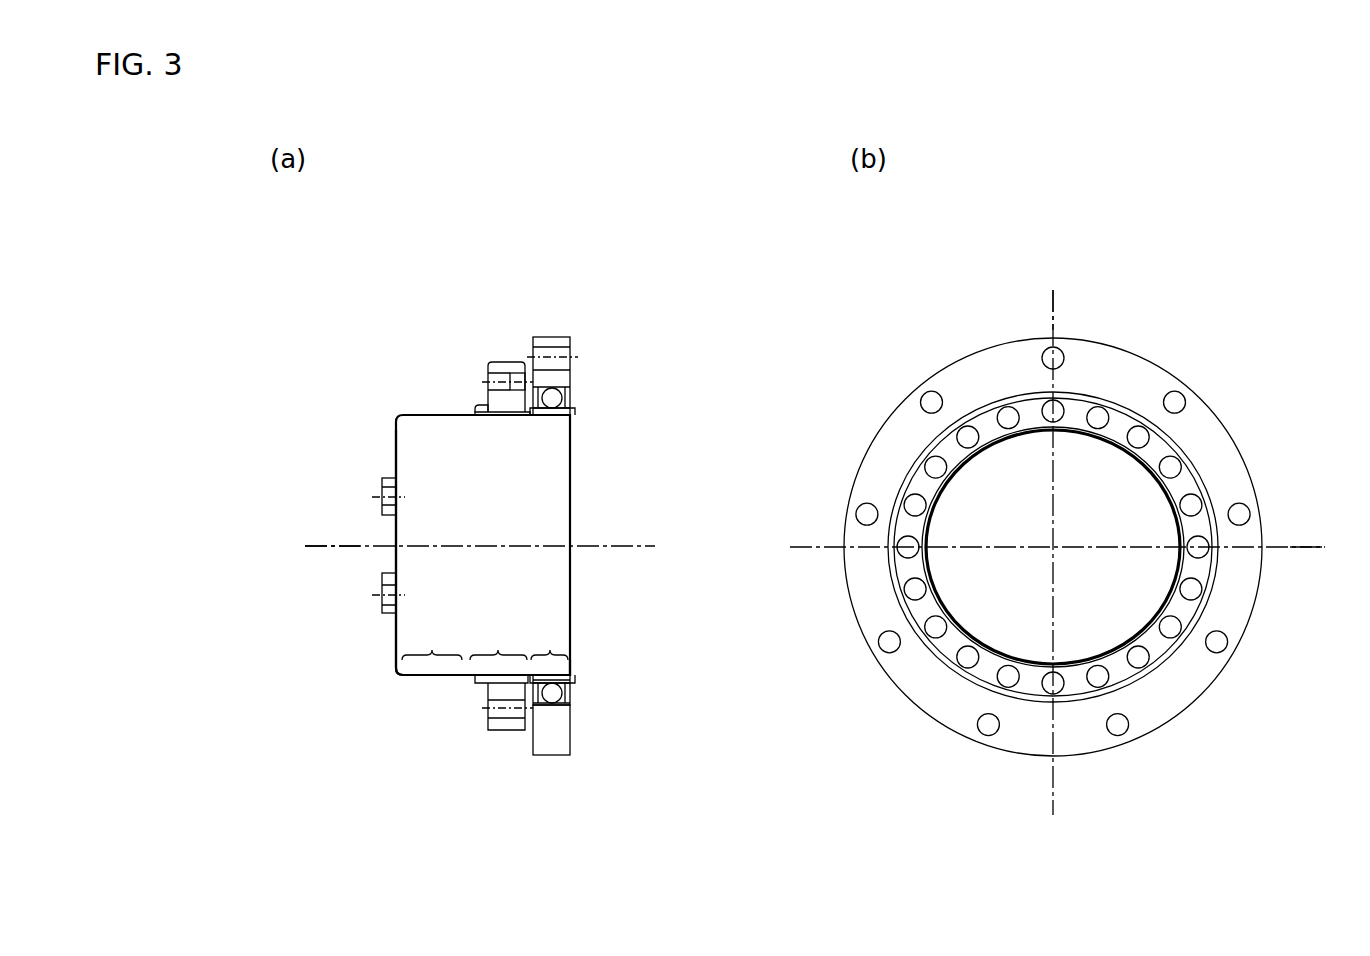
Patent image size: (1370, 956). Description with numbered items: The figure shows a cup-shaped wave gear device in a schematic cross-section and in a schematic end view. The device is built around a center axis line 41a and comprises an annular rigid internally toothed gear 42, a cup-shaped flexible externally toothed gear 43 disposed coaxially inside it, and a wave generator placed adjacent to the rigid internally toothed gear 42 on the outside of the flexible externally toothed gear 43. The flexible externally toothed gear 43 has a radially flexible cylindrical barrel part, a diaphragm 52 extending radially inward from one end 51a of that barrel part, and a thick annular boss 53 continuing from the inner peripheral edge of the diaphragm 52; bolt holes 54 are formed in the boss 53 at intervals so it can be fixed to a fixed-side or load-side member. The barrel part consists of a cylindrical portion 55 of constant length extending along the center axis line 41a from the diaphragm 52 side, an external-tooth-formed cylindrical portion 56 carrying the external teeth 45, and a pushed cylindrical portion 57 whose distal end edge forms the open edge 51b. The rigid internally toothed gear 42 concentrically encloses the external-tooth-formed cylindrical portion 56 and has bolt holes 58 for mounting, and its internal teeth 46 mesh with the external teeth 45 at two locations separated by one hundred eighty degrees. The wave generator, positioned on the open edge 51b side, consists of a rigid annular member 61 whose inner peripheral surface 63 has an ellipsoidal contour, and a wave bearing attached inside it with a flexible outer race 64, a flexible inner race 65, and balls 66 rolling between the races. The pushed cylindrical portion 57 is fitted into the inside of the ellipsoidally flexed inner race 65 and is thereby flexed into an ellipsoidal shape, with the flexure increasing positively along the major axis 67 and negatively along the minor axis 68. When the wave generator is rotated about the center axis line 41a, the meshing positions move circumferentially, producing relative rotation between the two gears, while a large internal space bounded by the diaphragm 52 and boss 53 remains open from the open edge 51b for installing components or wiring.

The center axis line 41a is at (323, 550).
The rigid internally toothed gear 42 is at (486, 356).
The flexible externally toothed gear 43 is at (420, 397).
The external teeth 45 is at (487, 408).
The internal teeth 46 is at (500, 417).
The one end of cylindrical barrel part 51a is at (395, 675).
The open edge 51b is at (570, 672).
The diaphragm 52 is at (392, 640).
The boss 53 is at (384, 603).
The bolt holes 54 is at (384, 492).
The cylindrical portion 55 is at (432, 642).
The external-tooth-formed cylindrical portion 56 is at (498, 642).
The pushed cylindrical portion 57 is at (549, 642).
The bolt holes 58 is at (503, 378).
The rigid annular member 61 is at (555, 748).
The inner peripheral surface 63 is at (556, 700).
The outer race 64 is at (568, 717).
The inner race 65 is at (577, 684).
The balls 66 is at (560, 696).
The major axis 67 is at (1284, 549).
The minor axis 68 is at (1062, 296).